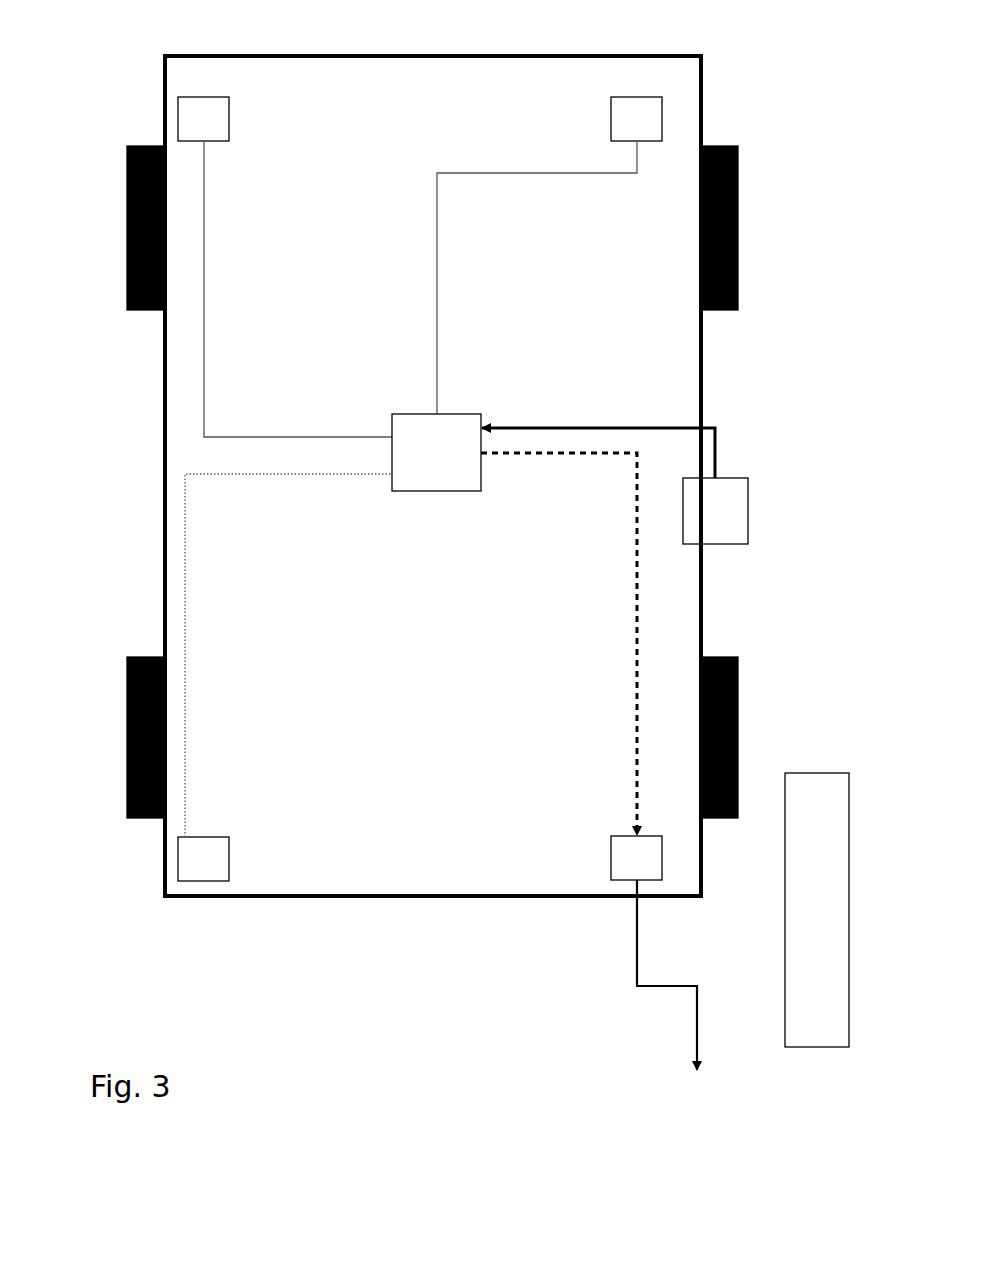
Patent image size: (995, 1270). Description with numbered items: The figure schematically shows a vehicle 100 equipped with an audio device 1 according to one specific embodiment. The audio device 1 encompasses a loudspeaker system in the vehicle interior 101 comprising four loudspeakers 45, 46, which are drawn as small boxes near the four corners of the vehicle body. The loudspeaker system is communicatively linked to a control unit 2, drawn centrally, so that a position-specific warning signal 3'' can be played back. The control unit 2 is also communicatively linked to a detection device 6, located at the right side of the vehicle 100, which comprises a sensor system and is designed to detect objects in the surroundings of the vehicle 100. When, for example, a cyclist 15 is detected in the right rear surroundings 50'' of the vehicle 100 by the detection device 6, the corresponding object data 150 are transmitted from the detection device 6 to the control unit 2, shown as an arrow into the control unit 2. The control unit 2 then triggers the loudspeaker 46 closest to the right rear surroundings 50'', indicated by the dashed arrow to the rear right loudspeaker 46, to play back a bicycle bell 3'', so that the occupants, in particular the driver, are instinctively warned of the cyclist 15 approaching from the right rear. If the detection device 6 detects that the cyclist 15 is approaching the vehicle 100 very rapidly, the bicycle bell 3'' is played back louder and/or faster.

The audio device 1 is at (432, 466).
The control unit 2 is at (437, 491).
The position-specific warning signal 3'' is at (645, 975).
The detection device 6 is at (717, 545).
The cyclist 15 is at (817, 1047).
The loudspeaker 45 is at (203, 97).
The loudspeaker 46 is at (662, 858).
The right rear surroundings 50'' is at (793, 699).
The vehicle 100 is at (163, 472).
The vehicle interior 101 is at (417, 882).
The object data 150 is at (715, 457).